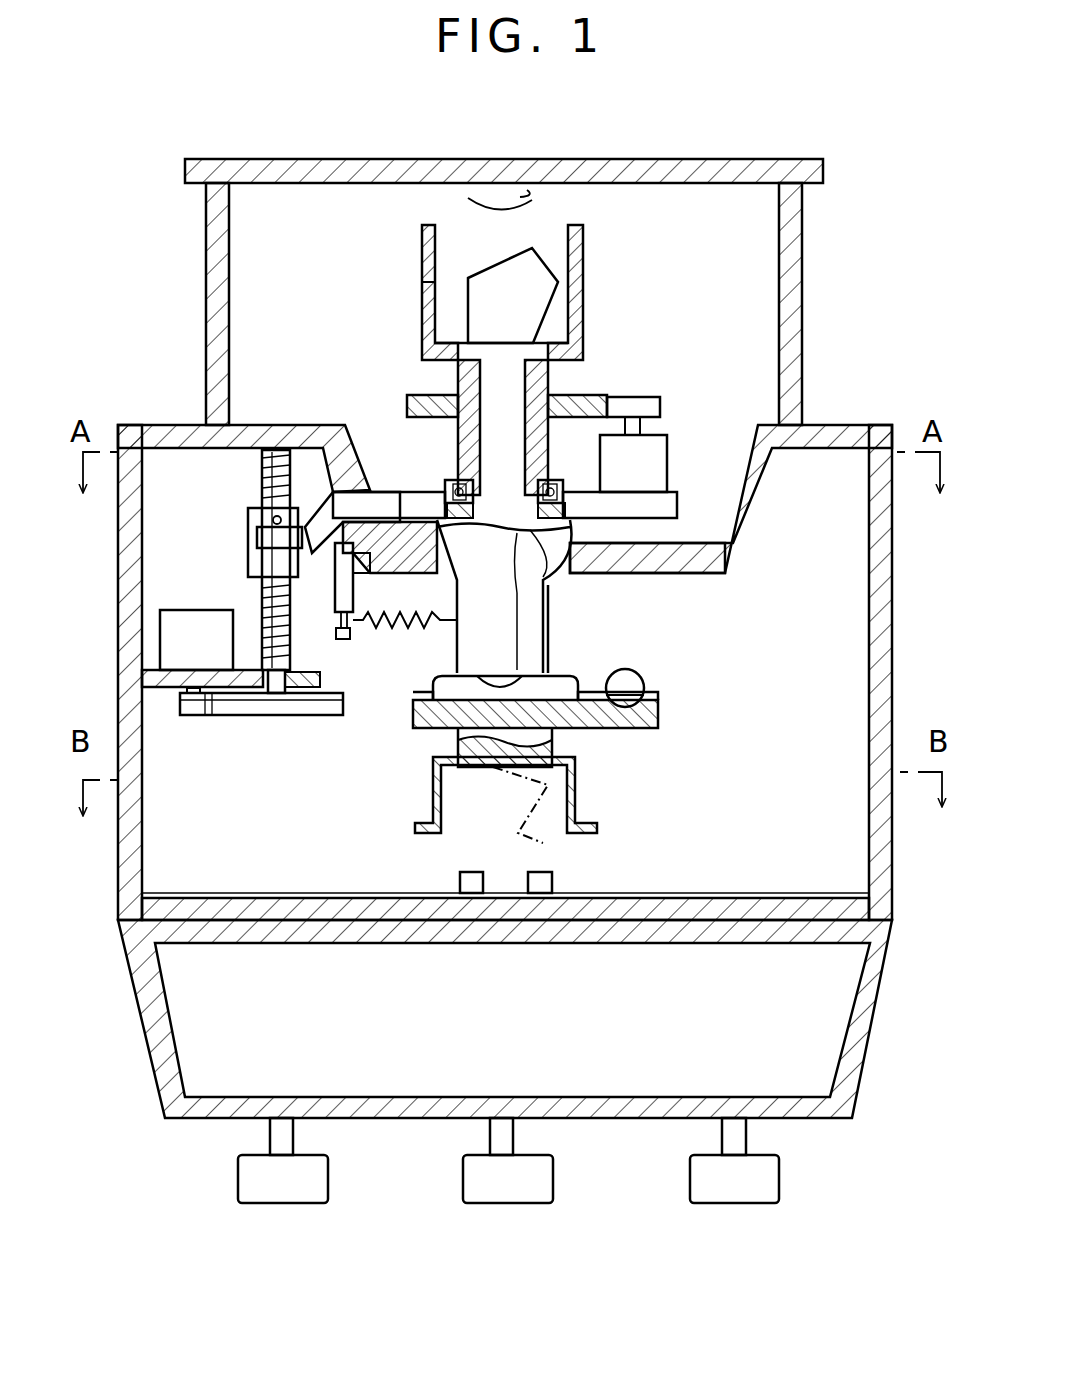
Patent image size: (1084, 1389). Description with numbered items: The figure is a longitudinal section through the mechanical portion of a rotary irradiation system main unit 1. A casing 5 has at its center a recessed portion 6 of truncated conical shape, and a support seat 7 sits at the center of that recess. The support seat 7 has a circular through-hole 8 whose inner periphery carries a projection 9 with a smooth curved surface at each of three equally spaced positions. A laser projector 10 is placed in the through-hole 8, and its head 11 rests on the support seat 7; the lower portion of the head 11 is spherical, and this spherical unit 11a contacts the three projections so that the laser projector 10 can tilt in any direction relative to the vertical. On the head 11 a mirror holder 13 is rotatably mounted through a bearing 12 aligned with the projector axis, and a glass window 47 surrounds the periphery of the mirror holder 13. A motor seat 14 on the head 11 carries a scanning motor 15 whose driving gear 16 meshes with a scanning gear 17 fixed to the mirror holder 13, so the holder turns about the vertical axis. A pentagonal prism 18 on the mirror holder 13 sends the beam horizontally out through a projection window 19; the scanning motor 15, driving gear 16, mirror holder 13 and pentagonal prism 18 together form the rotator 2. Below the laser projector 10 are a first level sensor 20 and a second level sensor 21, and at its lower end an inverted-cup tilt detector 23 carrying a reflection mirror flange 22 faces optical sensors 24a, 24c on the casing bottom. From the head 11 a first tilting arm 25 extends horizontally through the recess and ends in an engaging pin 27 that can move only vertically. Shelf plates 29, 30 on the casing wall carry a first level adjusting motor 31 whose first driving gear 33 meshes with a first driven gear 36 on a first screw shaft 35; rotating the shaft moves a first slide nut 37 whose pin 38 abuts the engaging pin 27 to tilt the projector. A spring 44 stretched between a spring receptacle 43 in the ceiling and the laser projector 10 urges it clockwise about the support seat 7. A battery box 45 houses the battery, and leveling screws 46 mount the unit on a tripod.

The rotary irradiation system main unit 1 is at (830, 210).
The rotator 2 is at (600, 210).
The casing 5 is at (856, 420).
The recessed portion 6 is at (722, 500).
The support seat 7 is at (700, 540).
The circular through-hole 8 is at (448, 583).
The projection 9 is at (578, 585).
The laser projector 10 is at (550, 625).
The head 11 is at (560, 480).
The spherical unit 11a is at (450, 478).
The bearing 12 is at (455, 478).
The mirror holder 13 is at (585, 255).
The motor seat 14 is at (680, 490).
The scanning motor 15 is at (672, 490).
The driving gear 16 is at (633, 400).
The scanning gear 17 is at (562, 395).
The pentagonal prism 18 is at (472, 318).
The projection window 19 is at (428, 300).
The first level sensor 20 is at (445, 680).
The second level sensor 21 is at (645, 680).
The reflection mirror flange 22 is at (432, 835).
The tilt detector 23 is at (577, 790).
The optical sensor 24a is at (460, 882).
The optical sensor 24c is at (552, 882).
The first tilting arm 25 is at (380, 485).
The engaging pin 27 is at (262, 536).
The shelf plate 29 is at (195, 695).
The shelf plate 30 is at (193, 690).
The first level adjusting motor 31 is at (185, 620).
The first driving gear 33 is at (195, 716).
The first screw shaft 35 is at (292, 630).
The first driven gear 36 is at (280, 716).
The first slide nut 37 is at (266, 500).
The pin 38 is at (285, 520).
The spring receptacle 43 is at (335, 568).
The spring 44 is at (330, 694).
The battery box 45 is at (205, 1120).
The screws 46 is at (555, 1180).
The glass window 47 is at (802, 298).